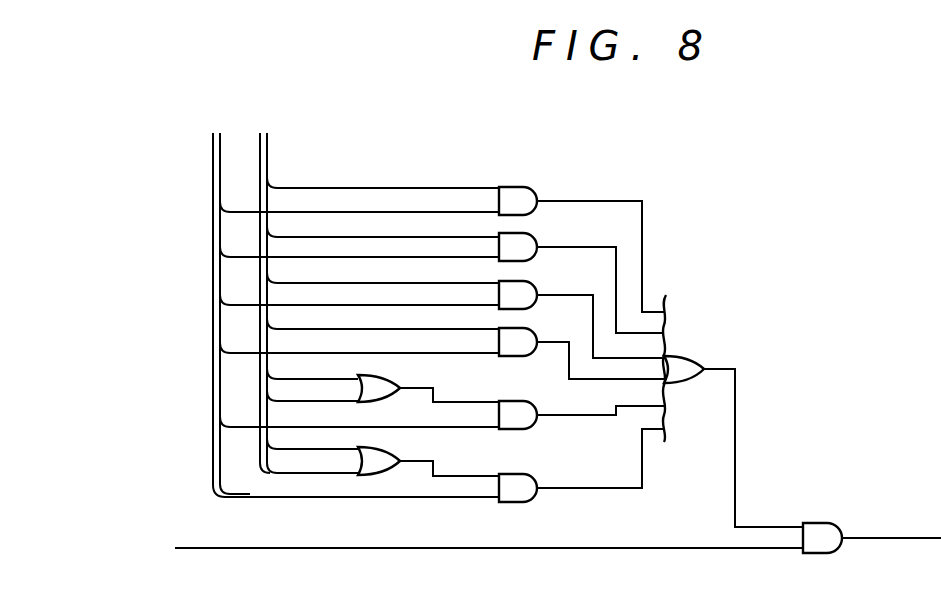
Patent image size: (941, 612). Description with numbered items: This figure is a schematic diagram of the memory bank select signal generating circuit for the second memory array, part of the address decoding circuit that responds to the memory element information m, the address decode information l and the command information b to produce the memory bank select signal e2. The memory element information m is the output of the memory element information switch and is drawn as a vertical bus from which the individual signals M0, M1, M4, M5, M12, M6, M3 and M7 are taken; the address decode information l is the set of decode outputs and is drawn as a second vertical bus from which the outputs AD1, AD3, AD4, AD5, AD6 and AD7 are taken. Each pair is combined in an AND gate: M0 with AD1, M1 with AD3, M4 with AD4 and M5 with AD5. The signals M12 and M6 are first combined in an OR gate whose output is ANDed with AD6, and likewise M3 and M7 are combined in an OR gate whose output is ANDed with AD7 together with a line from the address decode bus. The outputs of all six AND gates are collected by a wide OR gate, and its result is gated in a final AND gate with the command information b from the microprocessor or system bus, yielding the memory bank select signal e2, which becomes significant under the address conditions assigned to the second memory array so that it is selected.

The address decode information l is at (210, 340).
The memory element information m is at (271, 148).
The memory element information signal M0 is at (342, 190).
The address decode output AD1 is at (344, 209).
The memory element information signal M1 is at (344, 236).
The address decode output AD3 is at (345, 257).
The memory element information signal M4 is at (344, 283).
The address decode output AD4 is at (345, 304).
The memory element information signal M5 is at (345, 329).
The address decode output AD5 is at (345, 353).
The memory element information signal M12 is at (288, 380).
The memory element information signal M6 is at (288, 401).
The address decode output AD6 is at (368, 425).
The memory element information signal M3 is at (288, 450).
The memory element information signal M7 is at (288, 473).
The address decode output AD7 is at (443, 480).
The command information b is at (451, 547).
The memory bank select signal e2 is at (884, 541).